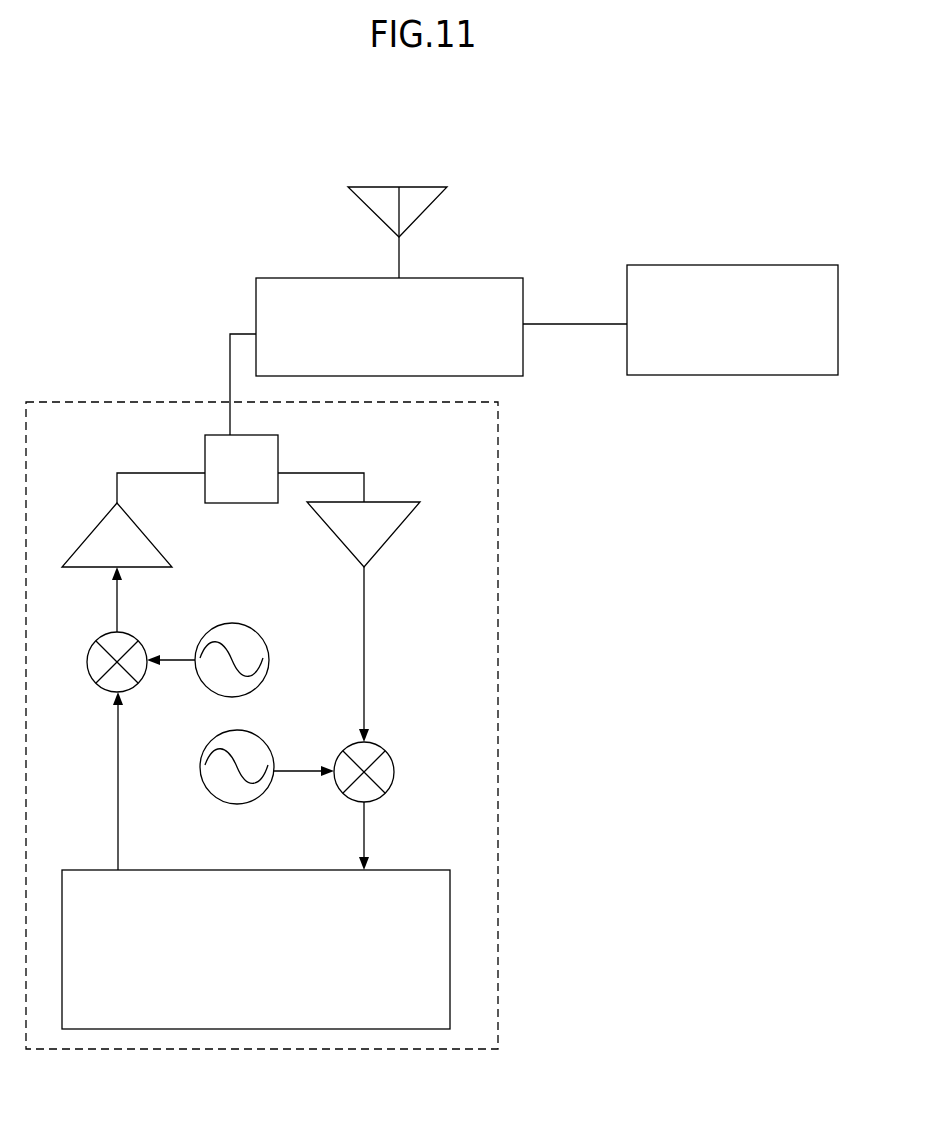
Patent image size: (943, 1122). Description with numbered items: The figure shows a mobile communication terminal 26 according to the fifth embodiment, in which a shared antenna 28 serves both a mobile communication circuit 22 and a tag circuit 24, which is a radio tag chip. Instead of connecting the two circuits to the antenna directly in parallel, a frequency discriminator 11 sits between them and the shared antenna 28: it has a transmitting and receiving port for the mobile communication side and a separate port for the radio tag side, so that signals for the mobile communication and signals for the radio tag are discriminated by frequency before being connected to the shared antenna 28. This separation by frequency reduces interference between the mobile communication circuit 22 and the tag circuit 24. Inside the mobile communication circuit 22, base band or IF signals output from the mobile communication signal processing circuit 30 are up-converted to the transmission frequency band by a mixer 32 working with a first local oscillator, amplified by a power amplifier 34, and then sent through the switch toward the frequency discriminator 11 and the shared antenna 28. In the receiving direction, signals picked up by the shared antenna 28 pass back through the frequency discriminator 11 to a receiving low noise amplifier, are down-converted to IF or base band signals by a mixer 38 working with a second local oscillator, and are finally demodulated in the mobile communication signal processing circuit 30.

The mobile communication terminal 26 is at (176, 262).
The shared antenna 28 is at (412, 185).
The frequency discriminator 11 is at (448, 277).
The tag circuit 24 is at (712, 263).
The mobile communication circuit 22 is at (498, 683).
The power amplifier 34 is at (148, 520).
The mixer 32 is at (147, 642).
The mixer 38 is at (388, 753).
The mobile communication signal processing circuit 30 is at (407, 868).